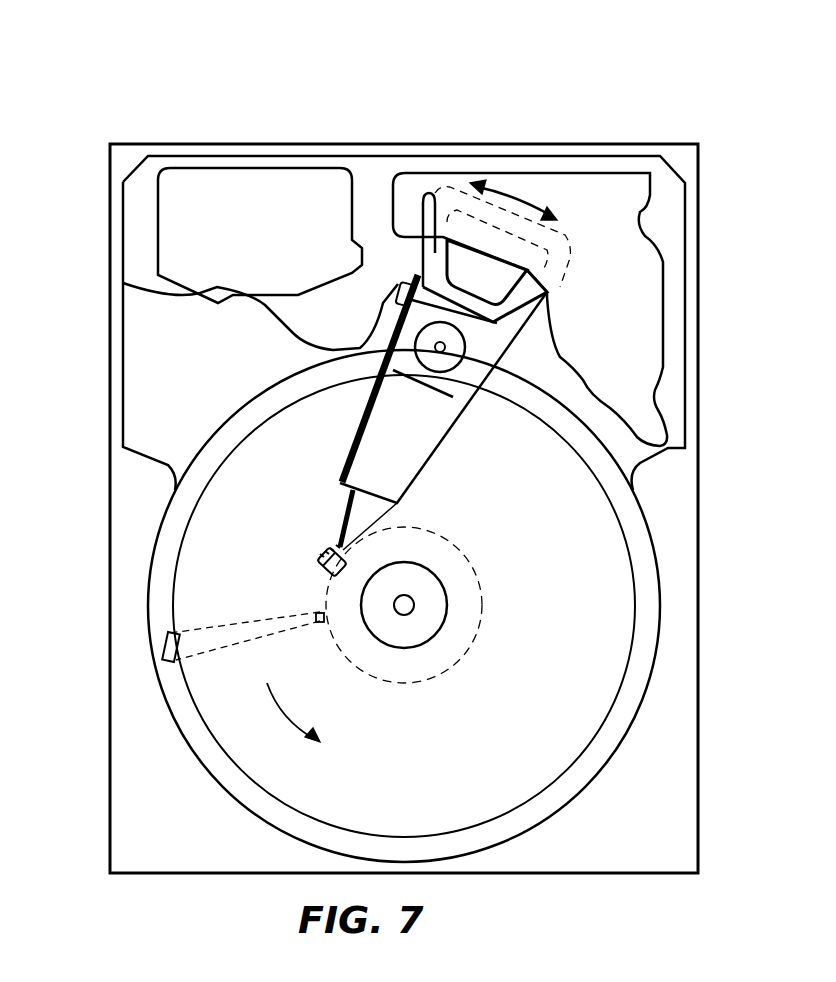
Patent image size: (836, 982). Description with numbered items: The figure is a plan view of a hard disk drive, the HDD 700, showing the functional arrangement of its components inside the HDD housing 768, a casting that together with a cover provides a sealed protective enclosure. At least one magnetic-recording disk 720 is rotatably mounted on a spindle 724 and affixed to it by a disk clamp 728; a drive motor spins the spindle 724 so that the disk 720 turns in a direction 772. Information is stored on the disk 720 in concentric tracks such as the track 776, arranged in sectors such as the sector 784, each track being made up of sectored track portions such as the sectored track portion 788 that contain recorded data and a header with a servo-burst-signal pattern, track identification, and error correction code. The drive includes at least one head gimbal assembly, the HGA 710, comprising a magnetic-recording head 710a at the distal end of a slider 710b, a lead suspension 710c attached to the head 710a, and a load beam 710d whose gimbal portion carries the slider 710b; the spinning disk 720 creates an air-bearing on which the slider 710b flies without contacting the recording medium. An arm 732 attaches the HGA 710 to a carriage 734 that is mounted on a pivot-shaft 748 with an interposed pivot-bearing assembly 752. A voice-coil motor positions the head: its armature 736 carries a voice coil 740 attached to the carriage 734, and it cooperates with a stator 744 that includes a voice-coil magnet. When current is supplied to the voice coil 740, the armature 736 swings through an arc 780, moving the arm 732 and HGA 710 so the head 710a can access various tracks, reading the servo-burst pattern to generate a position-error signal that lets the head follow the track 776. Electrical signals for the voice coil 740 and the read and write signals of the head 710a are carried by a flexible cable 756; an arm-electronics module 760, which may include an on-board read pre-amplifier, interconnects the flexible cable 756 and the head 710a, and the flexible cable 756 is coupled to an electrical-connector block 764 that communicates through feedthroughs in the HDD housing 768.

The HDD 700 is at (118, 103).
The HDD housing 768 is at (680, 155).
The electrical-connector block 764 is at (183, 227).
The stator 744 is at (640, 250).
The flexible cable 756 is at (265, 300).
The arm-electronics module 760 is at (392, 304).
The armature 736 is at (423, 235).
The voice coil 740 is at (445, 240).
The arc 780 is at (540, 215).
The arm 732 is at (382, 467).
The carriage 734 is at (460, 378).
The pivot-shaft 748 is at (457, 345).
The pivot-bearing assembly 752 is at (453, 360).
The HGA 710 is at (157, 325).
The magnetic-recording head 710a is at (320, 554).
The slider 710b is at (325, 551).
The lead suspension 710c is at (330, 548).
The load beam 710d is at (336, 545).
The magnetic-recording disk 720 is at (592, 548).
The spindle 724 is at (410, 602).
The disk clamp 728 is at (417, 631).
The track 776 is at (470, 562).
The direction 772 is at (305, 716).
The sector 784 is at (165, 652).
The sectored track portion 788 is at (316, 619).